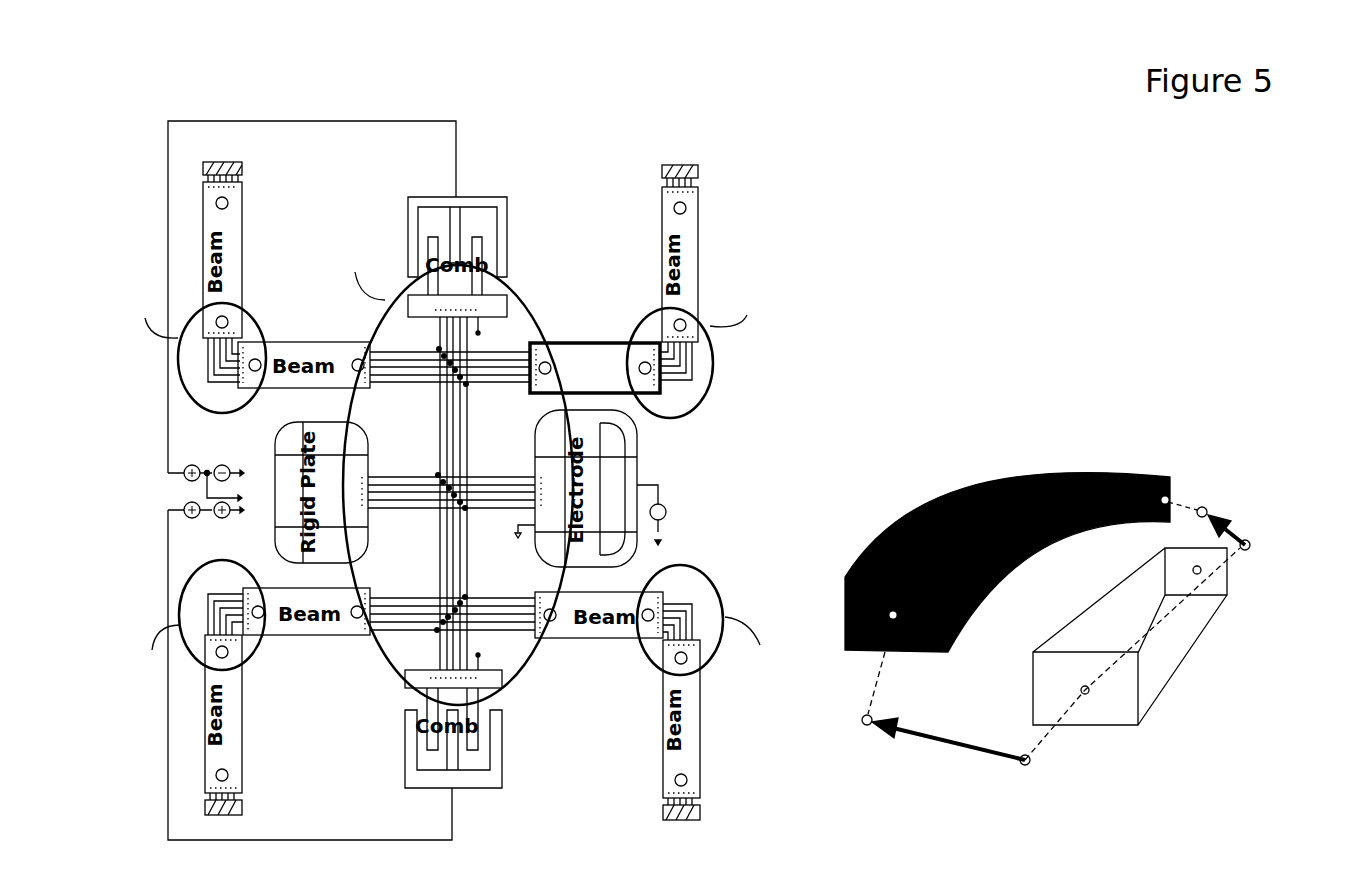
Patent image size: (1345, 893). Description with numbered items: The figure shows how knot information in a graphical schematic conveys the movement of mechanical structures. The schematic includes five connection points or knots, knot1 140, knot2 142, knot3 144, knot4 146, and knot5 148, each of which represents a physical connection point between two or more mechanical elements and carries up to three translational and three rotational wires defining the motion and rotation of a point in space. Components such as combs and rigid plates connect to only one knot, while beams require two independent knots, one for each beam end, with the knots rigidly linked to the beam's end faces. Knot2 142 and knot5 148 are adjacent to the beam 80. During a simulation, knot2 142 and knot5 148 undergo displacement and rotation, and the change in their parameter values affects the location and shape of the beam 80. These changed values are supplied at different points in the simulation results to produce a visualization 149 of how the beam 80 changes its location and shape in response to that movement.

The beam 80 is at (572, 343).
The knot1 140 is at (192, 352).
The knot2 142 is at (828, 562).
The knot3 144 is at (190, 617).
The knot4 146 is at (715, 623).
The knot5 148 is at (806, 475).
The visualization 149 is at (1140, 768).